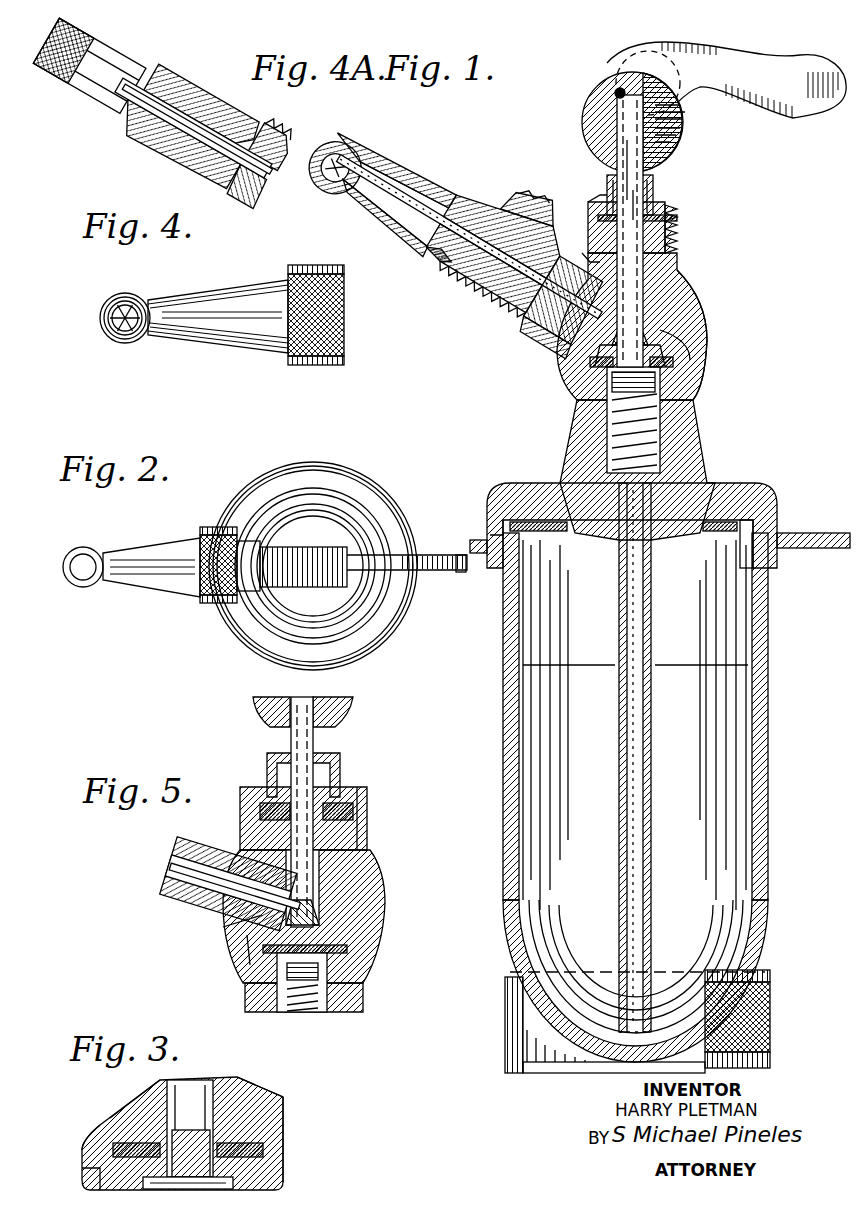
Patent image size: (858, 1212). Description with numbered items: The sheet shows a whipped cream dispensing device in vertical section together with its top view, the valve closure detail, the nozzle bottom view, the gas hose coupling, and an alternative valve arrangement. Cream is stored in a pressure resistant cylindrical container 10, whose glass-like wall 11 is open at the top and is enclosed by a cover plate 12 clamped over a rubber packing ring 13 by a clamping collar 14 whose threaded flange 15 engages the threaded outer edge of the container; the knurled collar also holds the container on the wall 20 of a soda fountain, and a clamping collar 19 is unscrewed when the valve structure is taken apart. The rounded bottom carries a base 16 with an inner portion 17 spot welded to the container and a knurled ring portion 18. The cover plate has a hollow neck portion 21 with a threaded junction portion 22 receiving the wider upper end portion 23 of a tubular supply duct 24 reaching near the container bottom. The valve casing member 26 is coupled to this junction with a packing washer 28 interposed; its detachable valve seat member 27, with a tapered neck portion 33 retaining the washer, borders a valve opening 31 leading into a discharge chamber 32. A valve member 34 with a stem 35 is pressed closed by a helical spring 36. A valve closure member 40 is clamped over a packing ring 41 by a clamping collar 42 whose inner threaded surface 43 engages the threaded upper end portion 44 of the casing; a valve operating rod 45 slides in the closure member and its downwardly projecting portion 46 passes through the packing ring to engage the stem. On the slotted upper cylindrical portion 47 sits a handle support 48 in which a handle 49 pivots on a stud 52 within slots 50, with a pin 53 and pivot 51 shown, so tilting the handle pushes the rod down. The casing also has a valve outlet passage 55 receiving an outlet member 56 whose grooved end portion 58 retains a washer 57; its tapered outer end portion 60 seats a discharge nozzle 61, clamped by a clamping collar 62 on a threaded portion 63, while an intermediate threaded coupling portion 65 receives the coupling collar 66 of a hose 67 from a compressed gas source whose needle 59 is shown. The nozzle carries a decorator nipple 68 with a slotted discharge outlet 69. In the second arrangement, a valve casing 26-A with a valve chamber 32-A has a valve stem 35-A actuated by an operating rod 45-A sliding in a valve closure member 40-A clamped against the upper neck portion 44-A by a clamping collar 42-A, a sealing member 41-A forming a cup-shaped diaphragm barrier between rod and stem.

In FIG. 1, the container 10 is at (508, 726).
In FIG. 1, the glass container wall 11 is at (728, 706).
In FIG. 1, the cover plate 12 is at (746, 520).
In FIG. 1, the packing ring 13 is at (737, 535).
In FIG. 1, the clamping collar 14 is at (508, 483).
In FIG. 1, the threaded flange 15 is at (486, 570).
In FIG. 1, the base 16 is at (770, 1063).
In FIG. 1, the inner portion 17 is at (582, 1063).
In FIG. 1, the ring portion 18 is at (770, 1021).
In FIG. 1, the clamping collar 19 is at (487, 535).
In FIG. 1, the wall 20 is at (800, 533).
In FIG. 1, the neck portion 21 is at (693, 438).
In FIG. 5, the neck portion 21 is at (256, 1012).
In FIG. 1, the threaded junction portion 22 is at (670, 383).
In FIG. 5, the threaded junction portion 22 is at (363, 978).
In FIG. 3, the threaded junction portion 22 is at (268, 1176).
In FIG. 1, the upper end portion 23 is at (665, 415).
In FIG. 5, the upper end portion 23 is at (283, 1012).
In FIG. 1, the supply duct 24 is at (651, 800).
In FIG. 3, the supply duct 24 is at (95, 1169).
In FIG. 1, the valve casing member 26 is at (690, 302).
In FIG. 3, the valve casing member 26 is at (263, 1123).
In FIG. 1, the valve seat member 27 is at (705, 325).
In FIG. 5, the valve seat member 27 is at (267, 937).
In FIG. 3, the valve seat member 27 is at (263, 1117).
In FIG. 1, the packing washer 28 is at (700, 335).
In FIG. 3, the packing washer 28 is at (123, 1123).
In FIG. 1, the valve opening 31 is at (590, 362).
In FIG. 5, the valve opening 31 is at (223, 927).
In FIG. 3, the valve opening 31 is at (263, 1110).
In FIG. 1, the discharge chamber 32 is at (690, 265).
In FIG. 1, the neck portion 33 is at (595, 366).
In FIG. 3, the neck portion 33 is at (130, 1103).
In FIG. 1, the valve member 34 is at (675, 360).
In FIG. 5, the valve member 34 is at (360, 963).
In FIG. 3, the valve member 34 is at (265, 1152).
In FIG. 1, the stem 35 is at (690, 287).
In FIG. 3, the stem 35 is at (193, 1093).
In FIG. 1, the helical spring 36 is at (660, 432).
In FIG. 5, the helical spring 36 is at (310, 1007).
In FIG. 1, the valve closure member 40 is at (655, 190).
In FIG. 1, the packing ring 41 is at (660, 205).
In FIG. 1, the clamping collar 42 is at (677, 218).
In FIG. 1, the inner threaded surface 43 is at (677, 240).
In FIG. 1, the threaded upper end portion 44 is at (593, 237).
In FIG. 1, the valve operating rod 45 is at (617, 118).
In FIG. 2, the valve operating rod 45 is at (333, 625).
In FIG. 1, the downwardly projecting portion 46 is at (625, 195).
In FIG. 1, the slotted upper cylindrical portion 47 is at (627, 140).
In FIG. 1, the handle support 48 is at (590, 108).
In FIG. 2, the handle support 48 is at (288, 552).
In FIG. 5, the handle support 48 is at (255, 705).
In FIG. 1, the handle 49 is at (772, 80).
In FIG. 2, the handle 49 is at (432, 560).
In FIG. 1, the slots 50 is at (660, 114).
In FIG. 2, the slots 50 is at (345, 545).
In FIG. 1, the hub portion 51 is at (680, 130).
In FIG. 1, the stud 52 is at (612, 72).
In FIG. 2, the stud 52 is at (335, 508).
In FIG. 1, the pivot pin 53 is at (621, 88).
In FIG. 1, the valve outlet passage 55 is at (553, 327).
In FIG. 1, the outlet member 56 is at (535, 312).
In FIG. 4A, the outlet member 56 is at (252, 186).
In FIG. 2, the outlet member 56 is at (240, 607).
In FIG. 5, the outlet member 56 is at (213, 860).
In FIG. 1, the washer 57 is at (583, 272).
In FIG. 1, the grooved end portion 58 is at (553, 230).
In FIG. 1, the needle 59 is at (437, 253).
In FIG. 4A, the needle 59 is at (240, 130).
In FIG. 5, the needle 59 is at (180, 875).
In FIG. 1, the tapered outer end portion 60 is at (457, 195).
In FIG. 1, the discharge nozzle 61 is at (403, 160).
In FIG. 4, the discharge nozzle 61 is at (220, 300).
In FIG. 2, the discharge nozzle 61 is at (143, 577).
In FIG. 1, the clamping collar 62 is at (468, 296).
In FIG. 4, the clamping collar 62 is at (310, 265).
In FIG. 2, the clamping collar 62 is at (205, 535).
In FIG. 1, the threaded portion 63 is at (500, 308).
In FIG. 4A, the threaded portion 63 is at (280, 130).
In FIG. 1, the threaded coupling portion 65 is at (462, 270).
In FIG. 4A, the threaded coupling portion 65 is at (225, 182).
In FIG. 4A, the coupling collar 66 is at (195, 78).
In FIG. 4A, the hose 67 is at (108, 57).
In FIG. 1, the decorator nipple 68 is at (312, 186).
In FIG. 4, the decorator nipple 68 is at (118, 343).
In FIG. 2, the decorator nipple 68 is at (78, 575).
In FIG. 4, the slotted discharge outlet 69 is at (121, 300).
In FIG. 5, the valve closure member 40-A is at (270, 787).
In FIG. 5, the sealing member 41-A is at (267, 762).
In FIG. 5, the clamping collar 42-A is at (367, 833).
In FIG. 5, the upper neck portion 44-A is at (355, 800).
In FIG. 5, the operating rod 45-A is at (313, 741).
In FIG. 5, the valve casing 26-A is at (357, 863).
In FIG. 5, the valve chamber 32-A is at (317, 907).
In FIG. 5, the valve stem 35-A is at (307, 897).